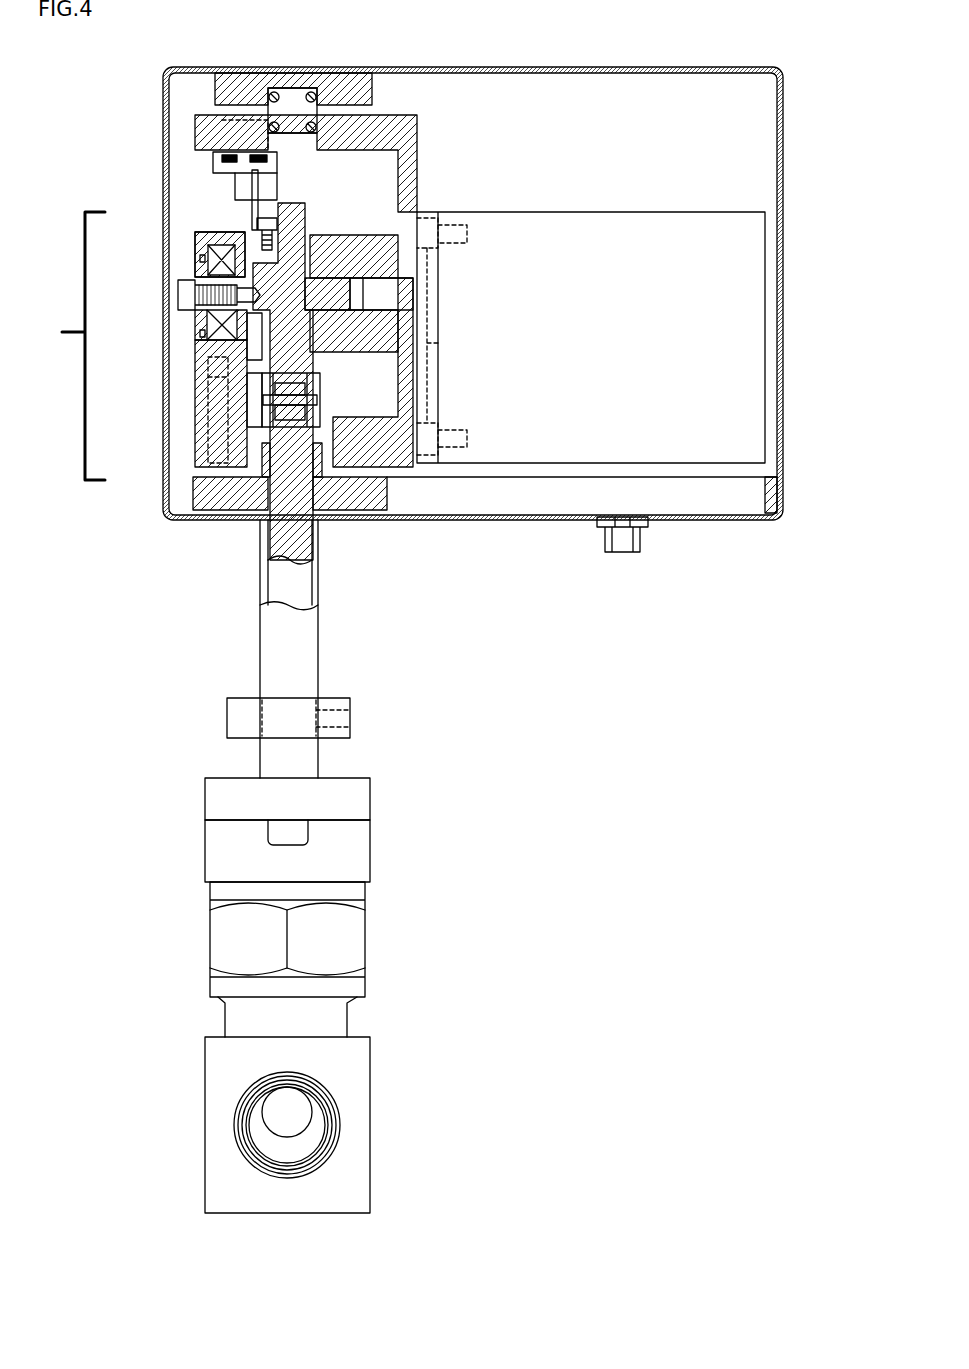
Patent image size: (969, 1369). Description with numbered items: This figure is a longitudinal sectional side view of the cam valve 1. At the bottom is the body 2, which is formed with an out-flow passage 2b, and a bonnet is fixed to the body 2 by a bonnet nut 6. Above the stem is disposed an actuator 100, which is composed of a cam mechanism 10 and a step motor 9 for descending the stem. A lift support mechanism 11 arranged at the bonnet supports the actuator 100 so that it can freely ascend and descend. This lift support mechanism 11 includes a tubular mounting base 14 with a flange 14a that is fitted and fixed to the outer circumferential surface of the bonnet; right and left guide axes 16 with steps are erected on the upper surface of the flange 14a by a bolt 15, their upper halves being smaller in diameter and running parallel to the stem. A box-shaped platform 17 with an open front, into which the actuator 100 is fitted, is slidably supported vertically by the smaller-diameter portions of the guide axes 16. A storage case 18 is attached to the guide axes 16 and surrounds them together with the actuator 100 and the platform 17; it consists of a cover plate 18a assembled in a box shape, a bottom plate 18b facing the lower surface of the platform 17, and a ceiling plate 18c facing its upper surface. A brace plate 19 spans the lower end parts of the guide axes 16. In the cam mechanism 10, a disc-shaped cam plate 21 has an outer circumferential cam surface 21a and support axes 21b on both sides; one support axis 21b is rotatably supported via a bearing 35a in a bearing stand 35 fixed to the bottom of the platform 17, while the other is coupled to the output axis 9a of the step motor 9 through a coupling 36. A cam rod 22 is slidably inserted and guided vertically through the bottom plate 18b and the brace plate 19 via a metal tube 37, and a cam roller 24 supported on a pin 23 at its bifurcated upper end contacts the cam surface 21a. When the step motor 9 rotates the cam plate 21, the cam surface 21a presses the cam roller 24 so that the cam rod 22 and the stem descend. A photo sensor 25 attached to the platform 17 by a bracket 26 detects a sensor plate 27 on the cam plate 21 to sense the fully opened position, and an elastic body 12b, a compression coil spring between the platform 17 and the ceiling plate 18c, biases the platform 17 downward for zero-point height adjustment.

The cam valve 1 is at (140, 304).
The body 2 is at (204, 1126).
The out-flow passage 2b is at (292, 1112).
The bonnet nut 6 is at (345, 940).
The step motor 9 is at (580, 240).
The output axis 9a is at (398, 295).
The cam mechanism 10 is at (262, 368).
The lift support mechanism 11 is at (259, 665).
The elastic body 12b is at (305, 90).
The mounting base 14 is at (222, 856).
The flange 14a is at (340, 803).
The bolt 15 is at (290, 832).
The guide axes 16 is at (265, 590).
The platform 17 is at (382, 140).
The storage case 18 is at (786, 166).
The cover plate 18a is at (505, 67).
The bottom plate 18b is at (348, 490).
The ceiling plate 18c is at (245, 85).
The brace plate 19 is at (240, 723).
The cam plate 21 is at (292, 215).
The cam surface 21a is at (292, 388).
The support axis 21b is at (225, 243).
The cam rod 22 is at (290, 537).
The pin 23 is at (264, 402).
The cam roller 24 is at (302, 412).
The photo sensor 25 is at (240, 190).
The bracket 26 is at (213, 160).
The sensor plate 27 is at (258, 185).
The bearing stand 35 is at (200, 352).
The bearing 35a is at (212, 262).
The coupling 36 is at (376, 248).
The metal tube 37 is at (263, 478).
The actuator 100 is at (61, 346).